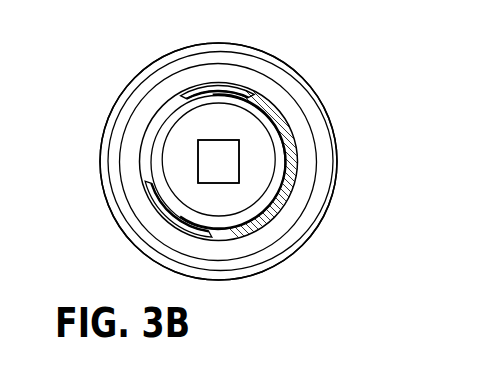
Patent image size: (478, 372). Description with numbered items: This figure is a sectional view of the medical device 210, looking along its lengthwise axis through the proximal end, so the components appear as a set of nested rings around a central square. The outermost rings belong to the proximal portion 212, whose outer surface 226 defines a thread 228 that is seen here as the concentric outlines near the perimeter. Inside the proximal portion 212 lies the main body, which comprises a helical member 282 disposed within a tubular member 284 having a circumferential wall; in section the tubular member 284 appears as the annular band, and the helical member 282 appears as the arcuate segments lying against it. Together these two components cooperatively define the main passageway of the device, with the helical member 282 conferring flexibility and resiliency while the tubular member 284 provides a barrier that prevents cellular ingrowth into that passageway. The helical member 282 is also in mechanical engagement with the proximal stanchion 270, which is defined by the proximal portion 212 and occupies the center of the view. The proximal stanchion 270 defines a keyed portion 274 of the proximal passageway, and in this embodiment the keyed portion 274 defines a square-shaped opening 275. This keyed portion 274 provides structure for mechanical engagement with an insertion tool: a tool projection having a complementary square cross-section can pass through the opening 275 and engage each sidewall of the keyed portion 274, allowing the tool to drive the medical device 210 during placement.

The medical device 210 is at (347, 59).
The proximal portion 212 is at (293, 258).
The outer surface 226 is at (313, 237).
The thread 228 is at (323, 198).
The tubular member 284 is at (305, 115).
The helical member 282 is at (172, 105).
The proximal stanchion 270 is at (178, 166).
The keyed portion 274 is at (218, 139).
The square-shaped opening 275 is at (220, 175).